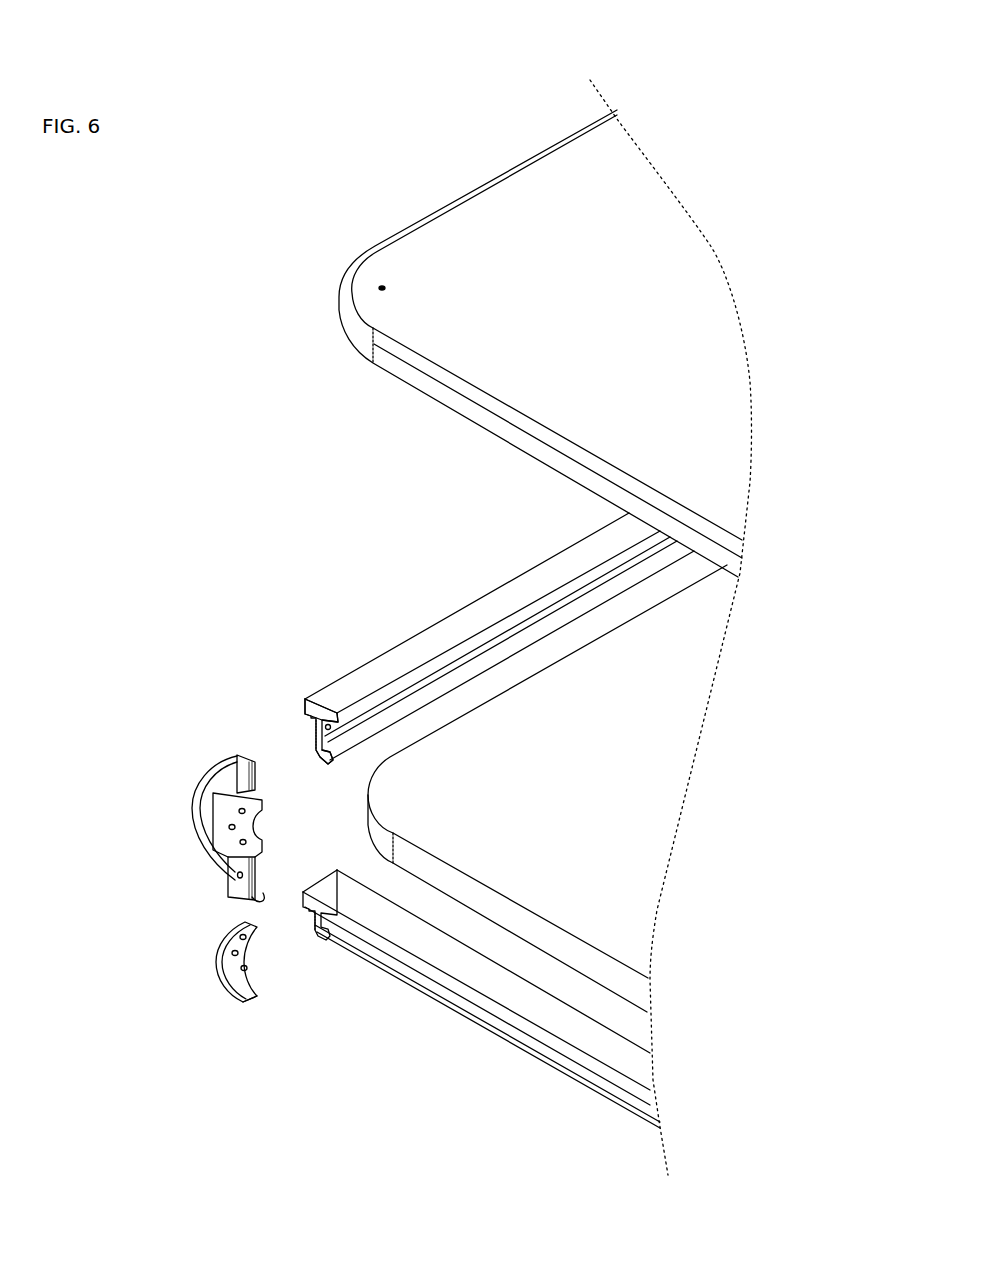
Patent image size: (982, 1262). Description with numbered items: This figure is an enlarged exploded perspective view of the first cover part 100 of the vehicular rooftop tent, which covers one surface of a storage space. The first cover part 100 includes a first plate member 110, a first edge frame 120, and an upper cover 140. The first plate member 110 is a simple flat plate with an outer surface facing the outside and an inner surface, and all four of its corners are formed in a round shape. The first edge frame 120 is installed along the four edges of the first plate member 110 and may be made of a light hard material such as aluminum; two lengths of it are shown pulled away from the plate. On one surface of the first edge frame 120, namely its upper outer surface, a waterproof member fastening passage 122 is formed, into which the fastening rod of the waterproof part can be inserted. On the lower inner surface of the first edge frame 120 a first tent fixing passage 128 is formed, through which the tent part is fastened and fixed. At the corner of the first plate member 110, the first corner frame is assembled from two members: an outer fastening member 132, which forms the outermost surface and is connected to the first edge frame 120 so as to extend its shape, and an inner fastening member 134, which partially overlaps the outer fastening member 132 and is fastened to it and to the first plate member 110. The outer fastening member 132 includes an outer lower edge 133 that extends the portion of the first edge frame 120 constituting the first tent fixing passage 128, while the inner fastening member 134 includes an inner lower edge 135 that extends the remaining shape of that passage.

The first cover part 100 is at (540, 84).
The first plate member 110 is at (650, 880).
The first edge frame 120 is at (383, 667).
The waterproof member fastening passage 122 is at (303, 703).
The first tent fixing passage 128 is at (317, 752).
The outer fastening member 132 is at (205, 845).
The outer lower edge 133 is at (265, 898).
The inner fastening member 134 is at (218, 970).
The inner lower edge 135 is at (248, 1002).
The upper cover 140 is at (410, 246).